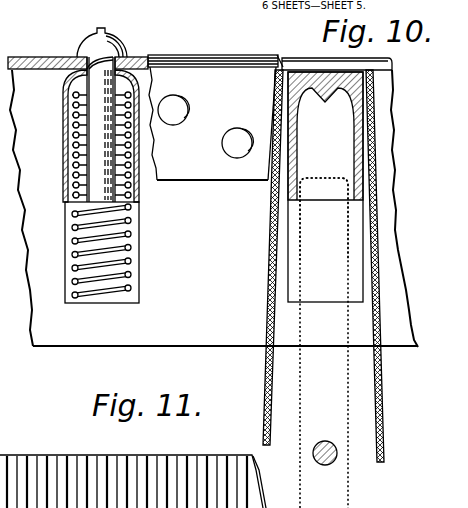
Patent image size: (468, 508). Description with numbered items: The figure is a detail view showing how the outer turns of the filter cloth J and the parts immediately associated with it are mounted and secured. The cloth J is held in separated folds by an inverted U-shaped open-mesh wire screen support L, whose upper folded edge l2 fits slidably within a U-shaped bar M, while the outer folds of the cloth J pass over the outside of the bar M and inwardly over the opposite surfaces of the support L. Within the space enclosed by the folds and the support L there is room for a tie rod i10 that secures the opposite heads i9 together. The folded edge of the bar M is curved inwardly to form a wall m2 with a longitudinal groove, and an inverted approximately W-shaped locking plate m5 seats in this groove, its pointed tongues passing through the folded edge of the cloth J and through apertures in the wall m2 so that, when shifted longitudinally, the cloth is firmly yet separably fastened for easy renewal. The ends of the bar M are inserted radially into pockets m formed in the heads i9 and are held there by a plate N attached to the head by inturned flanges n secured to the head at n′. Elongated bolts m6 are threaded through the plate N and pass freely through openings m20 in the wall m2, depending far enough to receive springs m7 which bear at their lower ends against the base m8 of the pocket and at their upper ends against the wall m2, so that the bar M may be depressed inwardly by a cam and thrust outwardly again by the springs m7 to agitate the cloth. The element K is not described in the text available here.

In FIG. 10, the screen support L is at (348, 374).
In FIG. 10, the locking plate m5 is at (275, 58).
In FIG. 10, the openings m20 is at (128, 50).
In FIG. 10, the elongated bolts m6 is at (88, 65).
In FIG. 10, the springs m7 is at (66, 150).
In FIG. 10, the pockets m is at (139, 254).
In FIG. 10, the base of the pocket m8 is at (113, 304).
In FIG. 10, the plate N is at (146, 57).
In FIG. 10, the inturned flanges n is at (190, 106).
In FIG. 10, the securing points of flanges n′ is at (223, 143).
In FIG. 10, the heads i9 is at (210, 222).
In FIG. 10, the filter cloth J is at (268, 307).
In FIG. 10, the curved wall m2 is at (338, 92).
In FIG. 10, the upper folded edge of the screen l2 is at (323, 177).
In FIG. 10, the U-shaped bars M is at (356, 202).
In FIG. 10, the tie rods i10 is at (323, 466).
In FIG. 11, the comb K is at (32, 470).